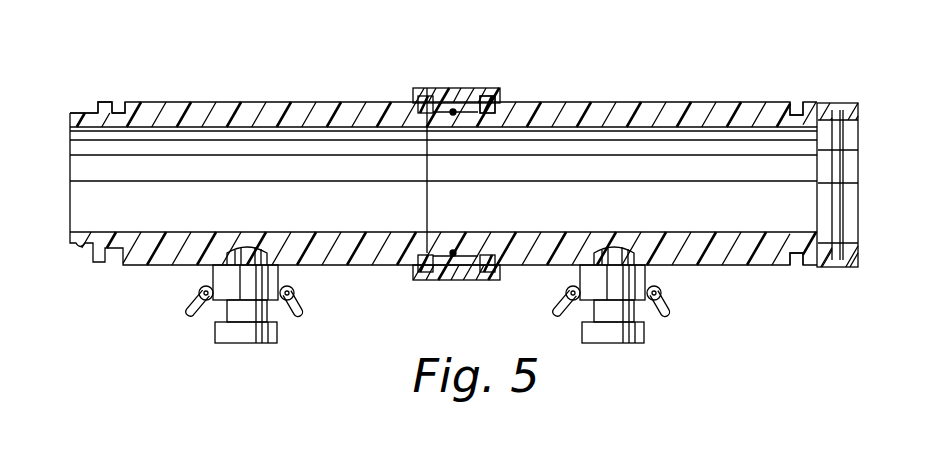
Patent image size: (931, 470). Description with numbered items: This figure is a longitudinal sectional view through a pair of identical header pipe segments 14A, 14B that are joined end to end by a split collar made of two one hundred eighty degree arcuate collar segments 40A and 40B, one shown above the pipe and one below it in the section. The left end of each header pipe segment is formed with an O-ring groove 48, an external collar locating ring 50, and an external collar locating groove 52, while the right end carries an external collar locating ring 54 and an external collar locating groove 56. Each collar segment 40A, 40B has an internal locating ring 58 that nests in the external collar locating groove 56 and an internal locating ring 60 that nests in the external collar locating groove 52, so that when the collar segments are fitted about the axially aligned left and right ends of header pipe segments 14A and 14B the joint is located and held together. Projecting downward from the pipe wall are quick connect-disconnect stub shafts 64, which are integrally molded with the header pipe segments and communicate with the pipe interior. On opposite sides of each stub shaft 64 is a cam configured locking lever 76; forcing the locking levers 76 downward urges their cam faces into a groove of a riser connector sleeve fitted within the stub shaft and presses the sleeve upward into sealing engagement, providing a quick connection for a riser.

The header pipe segment 14A is at (292, 103).
The header pipe segment 14B is at (602, 103).
The collar segment 40A is at (460, 88).
The collar segment 40B is at (452, 280).
The O-ring groove 48 is at (91, 103).
The external collar locating ring 50 is at (104, 102).
The external collar locating groove 52 is at (120, 112).
The external collar locating ring 54 is at (823, 103).
The external collar locating groove 56 is at (796, 103).
The internal locating ring 58 is at (427, 88).
The internal locating ring 60 is at (493, 100).
The quick connect-disconnect stub shaft 64 is at (213, 272).
The cam configured locking lever 76 is at (190, 312).